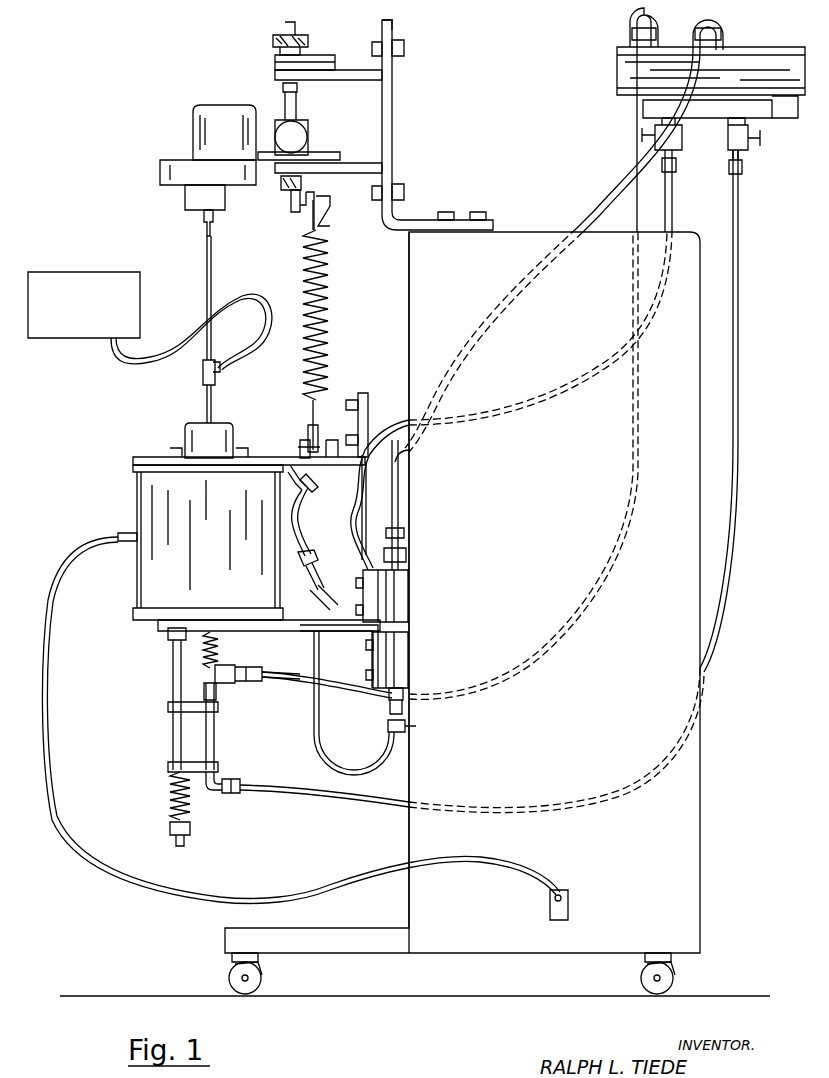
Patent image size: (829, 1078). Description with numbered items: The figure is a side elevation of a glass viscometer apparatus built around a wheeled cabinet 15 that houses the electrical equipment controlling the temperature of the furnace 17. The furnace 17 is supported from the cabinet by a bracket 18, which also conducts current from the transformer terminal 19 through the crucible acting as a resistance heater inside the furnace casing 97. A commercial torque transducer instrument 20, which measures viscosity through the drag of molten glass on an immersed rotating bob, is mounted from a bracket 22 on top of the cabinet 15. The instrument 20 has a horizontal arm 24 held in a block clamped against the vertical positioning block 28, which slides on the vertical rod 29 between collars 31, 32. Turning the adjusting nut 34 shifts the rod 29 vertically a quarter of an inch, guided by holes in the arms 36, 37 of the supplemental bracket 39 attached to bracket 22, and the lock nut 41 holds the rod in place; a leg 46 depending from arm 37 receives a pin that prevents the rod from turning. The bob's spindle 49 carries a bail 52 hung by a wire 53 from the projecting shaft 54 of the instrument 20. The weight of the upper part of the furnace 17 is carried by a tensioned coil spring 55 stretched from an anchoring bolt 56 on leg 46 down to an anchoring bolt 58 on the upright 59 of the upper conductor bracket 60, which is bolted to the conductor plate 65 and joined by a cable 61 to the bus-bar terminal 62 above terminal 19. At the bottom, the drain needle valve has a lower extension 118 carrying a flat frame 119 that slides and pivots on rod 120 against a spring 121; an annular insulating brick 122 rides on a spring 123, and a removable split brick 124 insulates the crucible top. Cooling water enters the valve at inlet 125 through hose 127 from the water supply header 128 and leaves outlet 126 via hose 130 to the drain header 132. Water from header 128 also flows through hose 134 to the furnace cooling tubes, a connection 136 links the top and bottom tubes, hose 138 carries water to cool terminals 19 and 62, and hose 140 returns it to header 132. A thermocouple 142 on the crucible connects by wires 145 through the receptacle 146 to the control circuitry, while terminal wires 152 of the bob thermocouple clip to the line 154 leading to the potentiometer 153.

The wheeled cabinet 15 is at (700, 758).
The furnace 17 is at (134, 486).
The bracket 18 is at (358, 626).
The transformer terminal 19 is at (376, 655).
The torque transducer instrument 20 is at (203, 107).
The bracket 22 is at (388, 98).
The horizontal arm 24 is at (318, 156).
The vertical positioning block 28 is at (277, 127).
The vertical rod 29 is at (297, 118).
The collar 31 is at (283, 87).
The collar 32 is at (303, 162).
The adjusting nut 34 is at (281, 64).
The bracket arm 36 is at (352, 72).
The bracket arm 37 is at (365, 166).
The supplemental bracket 39 is at (381, 28).
The lock nut 41 is at (276, 38).
The leg 46 is at (308, 212).
The spindle 49 is at (207, 402).
The bail 52 is at (203, 372).
The wire 53 is at (207, 253).
The projecting shaft 54 is at (203, 218).
The tensioned coil spring 55 is at (329, 290).
The anchoring bolt 56 is at (296, 210).
The anchoring bolt 58 is at (300, 444).
The upright 59 is at (308, 430).
The upper conductor bracket 60 is at (358, 398).
The cable 61 is at (356, 540).
The bus-bar terminal 62 is at (366, 580).
The conductor plate 65 is at (268, 457).
The casing 97 is at (146, 573).
The lower extension 118 is at (215, 700).
The flat frame 119 is at (190, 740).
The rod 120 is at (172, 690).
The spring 121 is at (170, 800).
The annular insulating brick 122 is at (218, 640).
The spring 123 is at (220, 666).
The removable split brick 124 is at (186, 428).
The inlet 125 is at (212, 792).
The outlet 126 is at (222, 680).
The hose 127 is at (332, 790).
The water supply header 128 is at (662, 118).
The hose 130 is at (348, 690).
The drain header 132 is at (738, 72).
The hose 134 is at (410, 418).
The connection 136 is at (313, 537).
The hose 138 is at (314, 742).
The hose 140 is at (608, 206).
The thermocouple 142 is at (124, 535).
The wires 145 is at (46, 630).
The receptacle 146 is at (561, 892).
The terminal wires 152 is at (217, 368).
The potentiometer 153 is at (32, 325).
The line 154 is at (118, 363).